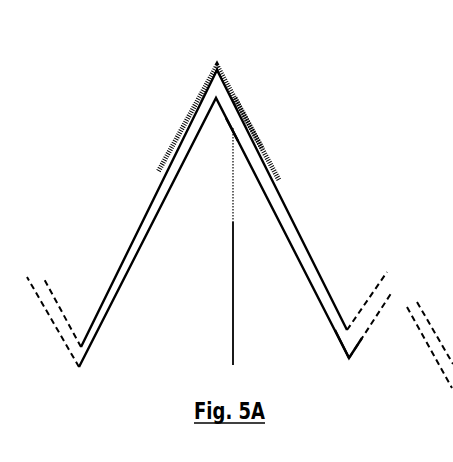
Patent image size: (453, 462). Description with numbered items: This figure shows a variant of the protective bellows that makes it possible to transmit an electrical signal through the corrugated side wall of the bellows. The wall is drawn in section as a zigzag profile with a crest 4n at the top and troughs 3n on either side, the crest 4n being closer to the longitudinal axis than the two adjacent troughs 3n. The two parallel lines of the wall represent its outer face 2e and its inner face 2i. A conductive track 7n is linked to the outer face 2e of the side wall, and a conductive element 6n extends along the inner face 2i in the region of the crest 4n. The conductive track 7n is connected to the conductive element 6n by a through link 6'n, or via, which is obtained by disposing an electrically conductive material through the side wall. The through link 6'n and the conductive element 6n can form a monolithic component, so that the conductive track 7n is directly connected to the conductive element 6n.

The inner face 2i is at (322, 272).
The outer face 2e is at (303, 280).
The trough 3n is at (354, 362).
The crest 4n is at (225, 70).
The conductive element 6n is at (259, 136).
The through link 6'n is at (247, 108).
The conductive track 7n is at (240, 264).